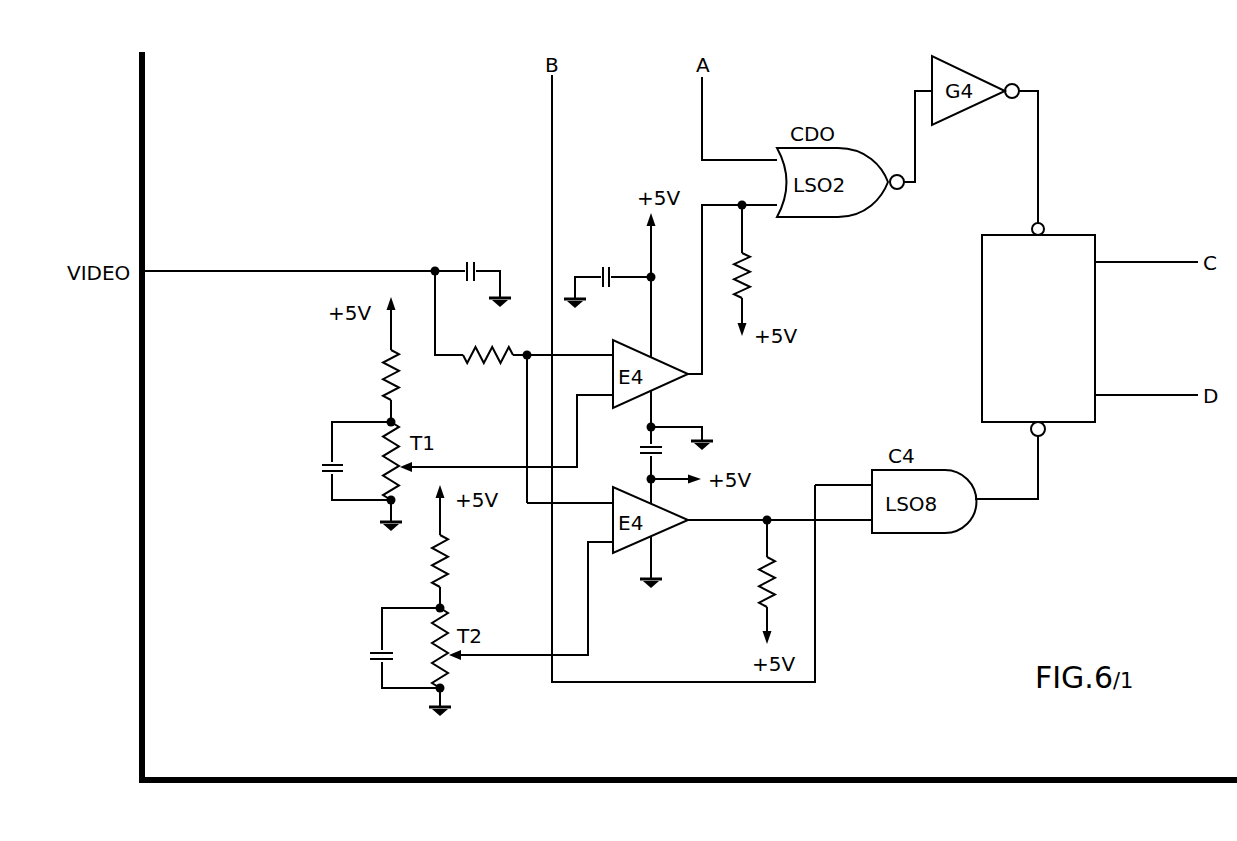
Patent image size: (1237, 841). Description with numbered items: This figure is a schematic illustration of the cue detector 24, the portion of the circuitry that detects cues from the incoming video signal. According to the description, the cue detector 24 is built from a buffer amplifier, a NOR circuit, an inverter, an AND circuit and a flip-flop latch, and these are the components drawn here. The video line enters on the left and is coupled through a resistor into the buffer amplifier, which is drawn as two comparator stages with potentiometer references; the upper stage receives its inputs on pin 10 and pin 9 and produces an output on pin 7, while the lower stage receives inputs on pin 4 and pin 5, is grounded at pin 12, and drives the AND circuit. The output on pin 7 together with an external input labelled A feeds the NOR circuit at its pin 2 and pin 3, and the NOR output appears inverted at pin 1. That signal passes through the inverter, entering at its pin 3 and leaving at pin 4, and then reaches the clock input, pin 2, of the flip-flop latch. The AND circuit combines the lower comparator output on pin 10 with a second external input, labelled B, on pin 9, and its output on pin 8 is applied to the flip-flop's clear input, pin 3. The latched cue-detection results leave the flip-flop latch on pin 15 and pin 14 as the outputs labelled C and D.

The cue detector 24 is at (982, 280).
The NOR gate output pin 1 is at (910, 140).
The pin 2 is at (893, 199).
The pin 3 is at (895, 252).
The pin 4 is at (782, 285).
The comparator input pin 5 is at (601, 537).
The comparator output pin 7 is at (714, 289).
The AND gate output pin 8 is at (1006, 469).
The pin 9 is at (731, 431).
The pin 10 is at (699, 428).
The comparator ground pin 12 is at (662, 561).
The flip flop output pin 14 is at (1132, 395).
The flip flop output pin 15 is at (1133, 264).